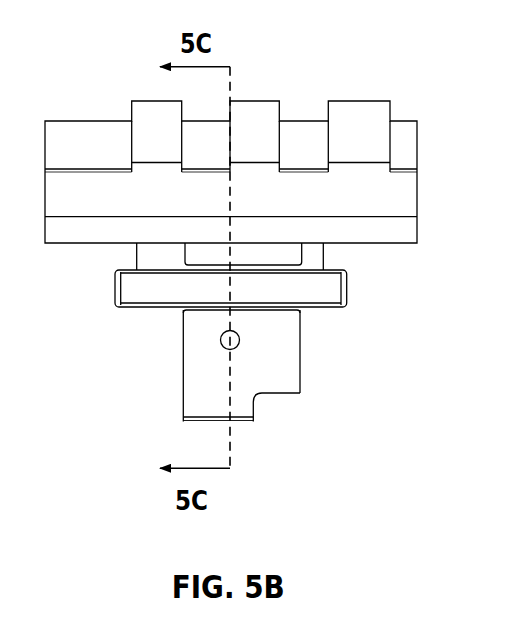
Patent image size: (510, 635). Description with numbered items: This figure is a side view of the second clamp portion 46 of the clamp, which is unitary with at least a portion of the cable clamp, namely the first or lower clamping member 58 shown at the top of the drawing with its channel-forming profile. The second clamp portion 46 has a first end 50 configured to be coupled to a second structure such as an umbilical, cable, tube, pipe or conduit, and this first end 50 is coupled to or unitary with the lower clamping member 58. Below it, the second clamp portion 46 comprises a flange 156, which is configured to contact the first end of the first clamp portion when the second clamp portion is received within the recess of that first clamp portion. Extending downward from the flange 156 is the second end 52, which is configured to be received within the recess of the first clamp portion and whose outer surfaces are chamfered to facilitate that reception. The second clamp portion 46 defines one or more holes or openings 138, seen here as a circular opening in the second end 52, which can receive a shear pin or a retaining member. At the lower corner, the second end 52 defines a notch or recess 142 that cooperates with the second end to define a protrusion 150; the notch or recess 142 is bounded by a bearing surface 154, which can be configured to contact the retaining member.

The second clamp portion 46 is at (207, 377).
The first end 50 is at (253, 174).
The second end 52 is at (237, 397).
The first or lower clamping member 58 is at (72, 132).
The holes or openings 138 is at (240, 338).
The notch or recess 142 is at (275, 395).
The protrusion 150 is at (248, 418).
The bearing surface 154 is at (261, 397).
The flange 156 is at (122, 285).